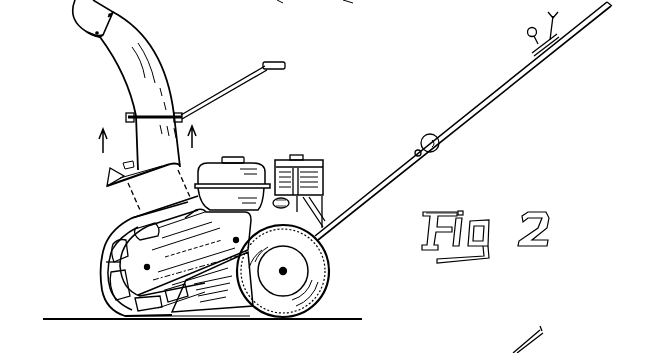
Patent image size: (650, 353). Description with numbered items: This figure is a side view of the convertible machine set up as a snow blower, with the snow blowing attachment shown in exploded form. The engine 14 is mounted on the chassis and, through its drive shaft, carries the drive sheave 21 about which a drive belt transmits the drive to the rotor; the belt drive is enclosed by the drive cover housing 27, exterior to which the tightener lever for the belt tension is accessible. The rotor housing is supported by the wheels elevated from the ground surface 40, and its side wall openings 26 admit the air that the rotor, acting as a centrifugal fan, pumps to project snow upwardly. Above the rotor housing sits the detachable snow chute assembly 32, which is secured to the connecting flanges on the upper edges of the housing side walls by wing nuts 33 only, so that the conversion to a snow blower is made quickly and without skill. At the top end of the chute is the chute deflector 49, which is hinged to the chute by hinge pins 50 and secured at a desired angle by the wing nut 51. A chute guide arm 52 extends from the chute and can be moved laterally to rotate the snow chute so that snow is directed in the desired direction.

The engine 14 is at (318, 160).
The drive sheave 21 is at (210, 9).
The side wall openings 26 is at (103, 240).
The drive cover housing 27 is at (104, 260).
The snow chute assembly 32 is at (132, 80).
The wing nuts 33 is at (122, 163).
The ground surface 40 is at (262, 320).
The chute deflector 49 is at (80, 21).
The hinge pins 50 is at (116, 10).
The wing nut 51 is at (96, 37).
The chute guide arm 52 is at (285, 65).